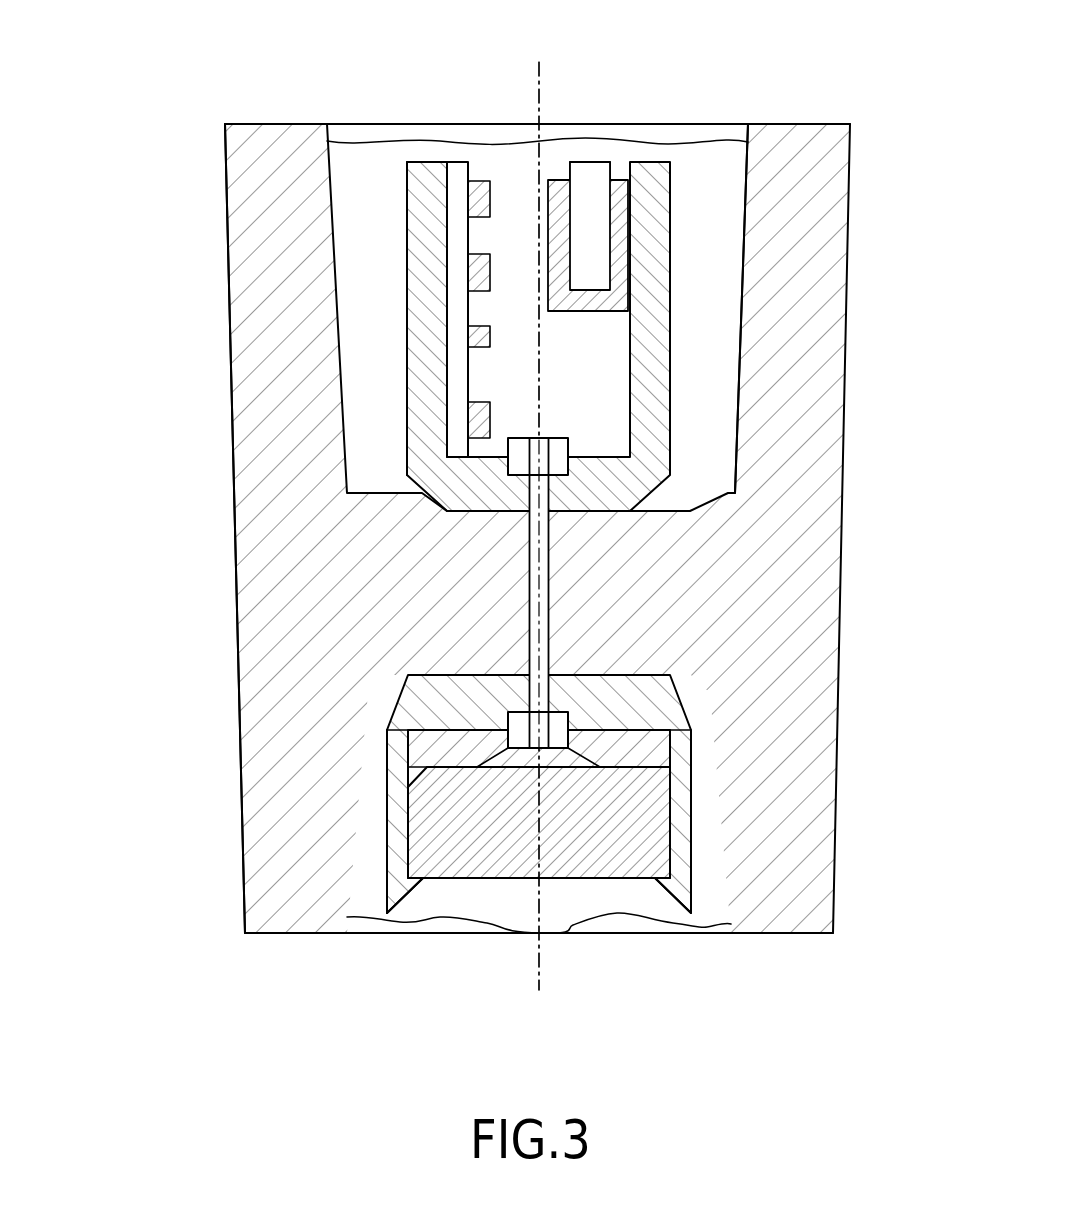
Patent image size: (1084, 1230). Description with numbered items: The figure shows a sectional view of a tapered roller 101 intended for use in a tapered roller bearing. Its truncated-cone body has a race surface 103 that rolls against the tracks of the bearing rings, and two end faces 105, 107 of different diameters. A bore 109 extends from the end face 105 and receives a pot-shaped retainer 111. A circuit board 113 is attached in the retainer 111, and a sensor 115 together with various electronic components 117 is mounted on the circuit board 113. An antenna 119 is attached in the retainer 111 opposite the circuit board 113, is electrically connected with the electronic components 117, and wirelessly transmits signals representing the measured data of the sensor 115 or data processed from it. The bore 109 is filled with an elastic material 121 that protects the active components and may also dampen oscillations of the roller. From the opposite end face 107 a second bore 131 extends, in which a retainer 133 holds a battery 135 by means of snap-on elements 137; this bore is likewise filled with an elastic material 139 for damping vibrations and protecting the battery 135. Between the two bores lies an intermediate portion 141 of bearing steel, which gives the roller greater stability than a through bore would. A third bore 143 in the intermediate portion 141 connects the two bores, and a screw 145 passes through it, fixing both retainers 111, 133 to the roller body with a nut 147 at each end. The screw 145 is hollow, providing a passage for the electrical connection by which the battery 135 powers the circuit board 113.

The tapered roller 101 is at (172, 195).
The race surface 103 is at (232, 407).
The end face 105 is at (264, 130).
The end face 107 is at (281, 935).
The bore 109 is at (348, 118).
The pot-shaped retainer 111 is at (650, 172).
The circuit board 113 is at (457, 168).
The sensor 115 is at (520, 405).
The electronic components 117 is at (489, 338).
The antenna 119 is at (588, 170).
The elastic material 121 is at (722, 163).
The second bore 131 is at (704, 965).
The retainer 133 is at (398, 895).
The battery 135 is at (500, 862).
The snap-on elements 137 is at (648, 902).
The elastic material 139 is at (430, 907).
The intermediate portion 141 is at (715, 550).
The third bore 143 is at (545, 622).
The screw 145 is at (540, 683).
The nuts 147 is at (563, 445).